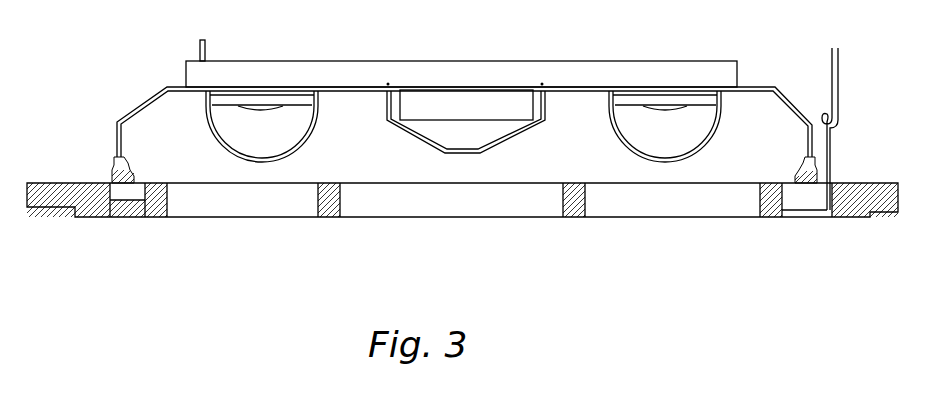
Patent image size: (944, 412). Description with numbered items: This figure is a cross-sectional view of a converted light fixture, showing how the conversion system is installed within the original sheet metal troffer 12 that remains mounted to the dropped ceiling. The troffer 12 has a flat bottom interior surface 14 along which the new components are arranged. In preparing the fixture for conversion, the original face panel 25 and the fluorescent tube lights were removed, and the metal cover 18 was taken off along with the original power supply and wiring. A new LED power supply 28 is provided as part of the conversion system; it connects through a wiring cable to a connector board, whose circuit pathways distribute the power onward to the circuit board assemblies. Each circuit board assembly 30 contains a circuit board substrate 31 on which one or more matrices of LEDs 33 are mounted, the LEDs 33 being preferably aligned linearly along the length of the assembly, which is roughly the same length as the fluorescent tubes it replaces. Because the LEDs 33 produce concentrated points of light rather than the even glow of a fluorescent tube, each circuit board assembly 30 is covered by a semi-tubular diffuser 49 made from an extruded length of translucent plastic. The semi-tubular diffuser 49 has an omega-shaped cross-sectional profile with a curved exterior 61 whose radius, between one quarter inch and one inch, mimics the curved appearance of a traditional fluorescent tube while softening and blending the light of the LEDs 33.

The sheet metal troffer 12 is at (125, 112).
The flat bottom interior surface 14 is at (197, 91).
The metal cover 18 is at (522, 134).
The face panel 25 is at (572, 217).
The LED power supply 28 is at (478, 108).
The circuit board assembly 30 is at (305, 108).
The circuit board substrate 31 is at (295, 106).
The LEDs 33 is at (262, 110).
The semi-tubular diffuser 49 is at (700, 150).
The curved exterior 61 is at (638, 159).